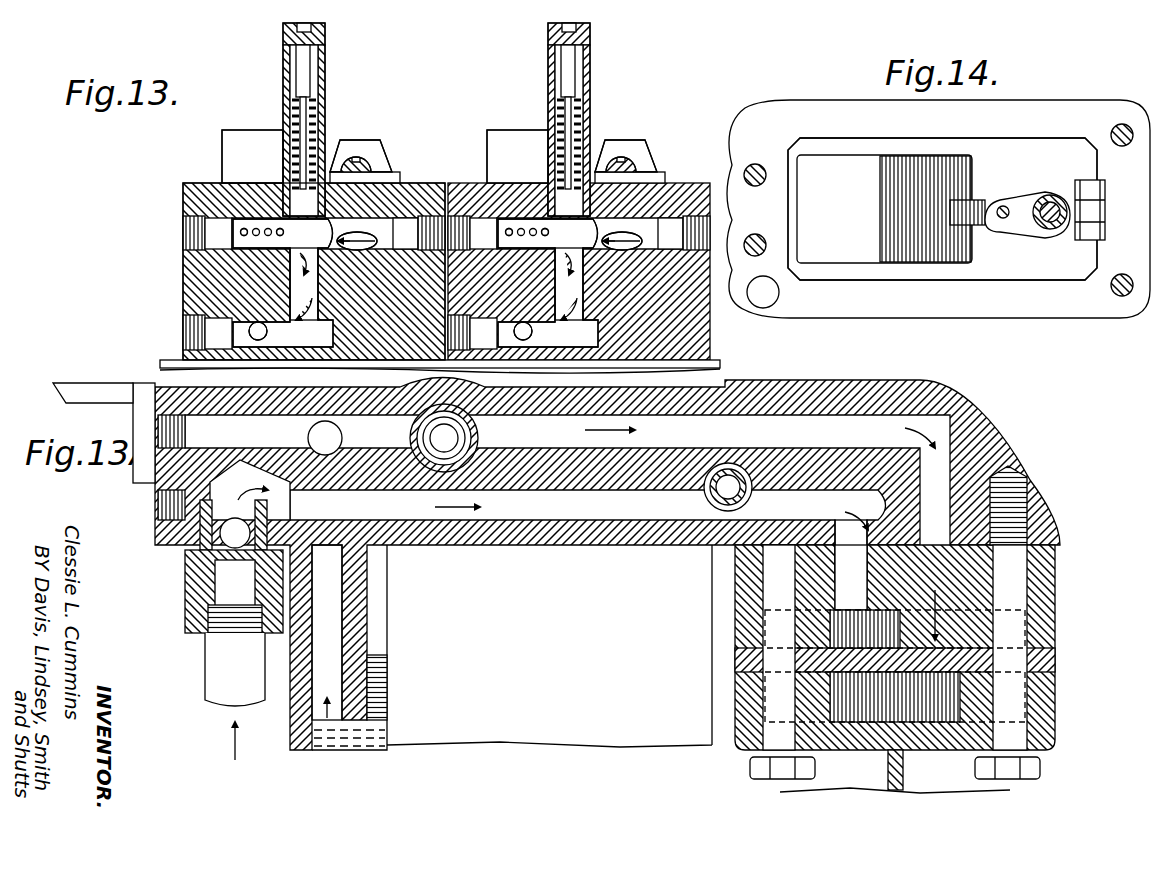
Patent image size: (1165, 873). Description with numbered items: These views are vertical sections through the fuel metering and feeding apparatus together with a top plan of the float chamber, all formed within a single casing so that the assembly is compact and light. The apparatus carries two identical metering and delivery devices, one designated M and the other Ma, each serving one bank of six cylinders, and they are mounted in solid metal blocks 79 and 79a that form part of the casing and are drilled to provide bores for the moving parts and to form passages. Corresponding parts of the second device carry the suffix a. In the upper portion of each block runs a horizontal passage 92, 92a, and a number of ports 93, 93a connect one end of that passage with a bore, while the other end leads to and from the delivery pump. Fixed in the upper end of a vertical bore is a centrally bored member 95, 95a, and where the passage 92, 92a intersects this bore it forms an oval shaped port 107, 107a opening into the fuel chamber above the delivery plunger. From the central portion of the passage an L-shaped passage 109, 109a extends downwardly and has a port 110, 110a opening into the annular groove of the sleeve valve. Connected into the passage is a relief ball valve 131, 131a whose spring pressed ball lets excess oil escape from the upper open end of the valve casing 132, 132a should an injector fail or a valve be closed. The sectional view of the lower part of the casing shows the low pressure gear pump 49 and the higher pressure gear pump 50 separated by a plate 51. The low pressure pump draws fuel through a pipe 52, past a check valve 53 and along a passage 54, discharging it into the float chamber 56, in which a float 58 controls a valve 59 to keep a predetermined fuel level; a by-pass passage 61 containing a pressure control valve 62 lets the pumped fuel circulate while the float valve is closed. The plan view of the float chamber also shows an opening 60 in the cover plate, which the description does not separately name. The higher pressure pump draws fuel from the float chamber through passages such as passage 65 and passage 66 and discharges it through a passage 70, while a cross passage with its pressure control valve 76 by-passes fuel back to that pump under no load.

In FIG. 13, the metal block 79 is at (712, 356).
In FIG. 13, the metal block 79a is at (190, 200).
In FIG. 13, the horizontal passage 92 is at (528, 222).
In FIG. 13, the horizontal passage 92a is at (245, 247).
In FIG. 13, the ports 93 is at (545, 228).
In FIG. 13, the ports 93a is at (280, 228).
In FIG. 13, the member 95 is at (645, 146).
In FIG. 13, the member 95a is at (375, 147).
In FIG. 13, the oval shaped port 107 is at (643, 233).
In FIG. 13, the oval shaped port 107a is at (380, 233).
In FIG. 13, the L-shaped passage 109 is at (582, 298).
In FIG. 13, the L-shaped passage 109a is at (300, 285).
In FIG. 13, the port 110 is at (527, 336).
In FIG. 13, the port 110a is at (262, 336).
In FIG. 13, the relief ball valve 131 is at (606, 170).
In FIG. 13, the relief ball valve 131a is at (362, 161).
In FIG. 13, the valve casing 132 is at (590, 95).
In FIG. 13, the valve casing 132a is at (325, 118).
In FIG. 13, the metering and delivery device M is at (466, 183).
In FIG. 13, the metering and delivery device Ma is at (214, 184).
In FIG. 13A, the low pressure gear pump 49 is at (845, 625).
In FIG. 13A, the higher pressure gear pump 50 is at (845, 698).
In FIG. 13A, the plate 51 is at (738, 660).
In FIG. 13A, the pipe 52 is at (218, 654).
In FIG. 13A, the check valve 53 is at (190, 560).
In FIG. 13A, the passage 54 is at (561, 512).
In FIG. 13A, the float chamber 56 is at (370, 740).
In FIG. 14, the float chamber 56 is at (1005, 268).
In FIG. 14, the float 58 is at (872, 255).
In FIG. 13A, the valve 59 is at (838, 580).
In FIG. 14, the valve 59 is at (1040, 194).
In FIG. 13A, the drain passage 60 is at (330, 656).
In FIG. 14, the drain passage 60 is at (765, 298).
In FIG. 13A, the by-pass passage 61 is at (705, 513).
In FIG. 13A, the pressure control valve 62 is at (746, 498).
In FIG. 13A, the passage 65 is at (758, 432).
In FIG. 13A, the passage 66 is at (937, 482).
In FIG. 13A, the passage 70 is at (345, 436).
In FIG. 13A, the pressure control valve 76 is at (478, 438).